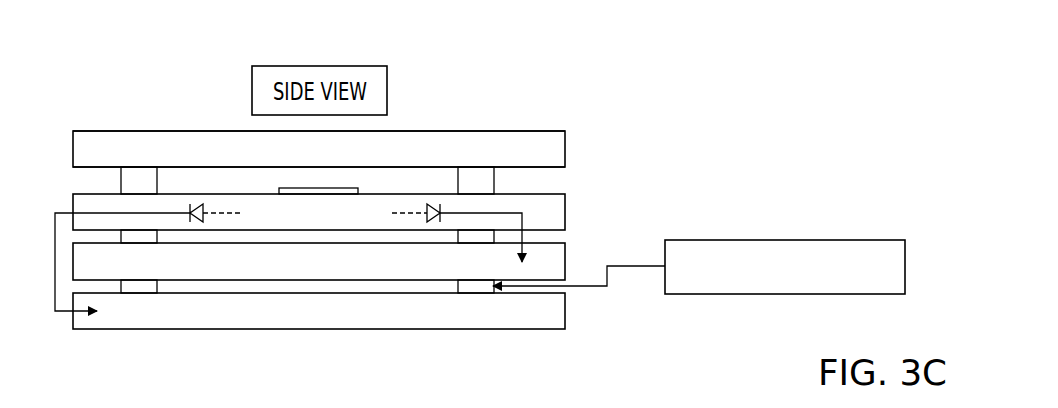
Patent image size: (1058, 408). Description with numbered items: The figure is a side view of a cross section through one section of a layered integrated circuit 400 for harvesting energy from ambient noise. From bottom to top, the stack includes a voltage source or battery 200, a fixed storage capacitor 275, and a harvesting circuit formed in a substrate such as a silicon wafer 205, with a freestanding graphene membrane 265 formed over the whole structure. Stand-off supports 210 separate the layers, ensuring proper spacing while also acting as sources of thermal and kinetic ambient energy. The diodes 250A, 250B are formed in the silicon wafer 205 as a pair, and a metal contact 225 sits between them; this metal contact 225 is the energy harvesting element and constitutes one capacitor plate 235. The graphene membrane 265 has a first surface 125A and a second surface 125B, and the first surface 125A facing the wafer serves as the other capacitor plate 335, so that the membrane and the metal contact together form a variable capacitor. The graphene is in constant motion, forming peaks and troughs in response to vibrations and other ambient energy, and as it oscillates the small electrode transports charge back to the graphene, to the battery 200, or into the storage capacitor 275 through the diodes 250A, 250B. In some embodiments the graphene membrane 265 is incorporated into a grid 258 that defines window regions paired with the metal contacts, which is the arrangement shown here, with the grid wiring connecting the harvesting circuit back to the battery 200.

The layered integrated circuit 400 is at (430, 52).
The freestanding graphene membrane 265 is at (565, 151).
The second surface 125B is at (556, 131).
The first surface 125A is at (557, 173).
The capacitor plate 335 is at (220, 170).
The metal contact 225 is at (358, 190).
The capacitor plate 235 is at (428, 139).
The silicon wafer 205 is at (565, 203).
The diode 250A is at (195, 203).
The diode 250B is at (483, 210).
The grid 258 is at (80, 179).
The storage capacitor 275 is at (565, 262).
The battery 200 is at (565, 312).
The stand-off supports 210 is at (866, 240).